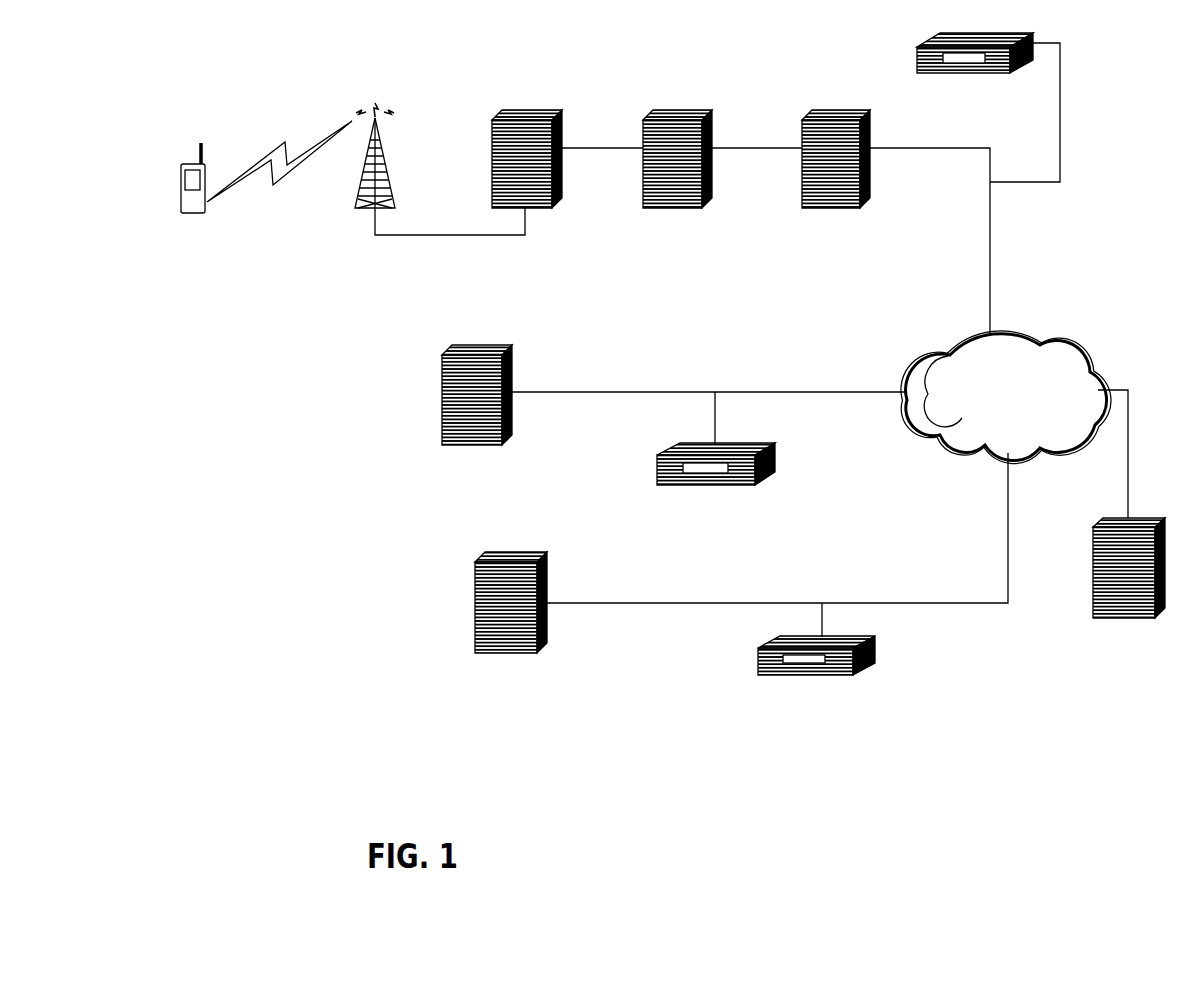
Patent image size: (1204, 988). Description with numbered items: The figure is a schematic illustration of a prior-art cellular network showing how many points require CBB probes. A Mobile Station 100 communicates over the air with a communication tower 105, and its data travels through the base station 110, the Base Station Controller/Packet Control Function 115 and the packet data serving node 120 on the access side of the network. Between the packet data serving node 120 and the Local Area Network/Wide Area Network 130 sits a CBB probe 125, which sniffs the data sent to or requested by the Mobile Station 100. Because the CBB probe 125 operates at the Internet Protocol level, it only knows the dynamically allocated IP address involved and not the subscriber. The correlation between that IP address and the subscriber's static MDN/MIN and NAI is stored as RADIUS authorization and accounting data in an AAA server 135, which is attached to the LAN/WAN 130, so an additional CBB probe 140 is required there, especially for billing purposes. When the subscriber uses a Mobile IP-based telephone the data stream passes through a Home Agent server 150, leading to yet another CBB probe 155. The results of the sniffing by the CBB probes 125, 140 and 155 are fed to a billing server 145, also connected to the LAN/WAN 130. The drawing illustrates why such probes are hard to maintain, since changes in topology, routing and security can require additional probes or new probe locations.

The mobile station 100 is at (208, 163).
The communication tower 105 is at (392, 165).
The base station 110 is at (561, 113).
The Base Station Controller/Packet Control Function 115 is at (727, 103).
The packet data serving node 120 is at (883, 101).
The CBB probe 125 is at (1030, 38).
The Local Area Network/Wide Area Network 130 is at (1078, 346).
The AAA server 135 is at (511, 350).
The CBB probe 140 is at (774, 447).
The billing server 145 is at (1148, 517).
The Home Agent server 150 is at (546, 562).
The CBB probe 155 is at (873, 641).